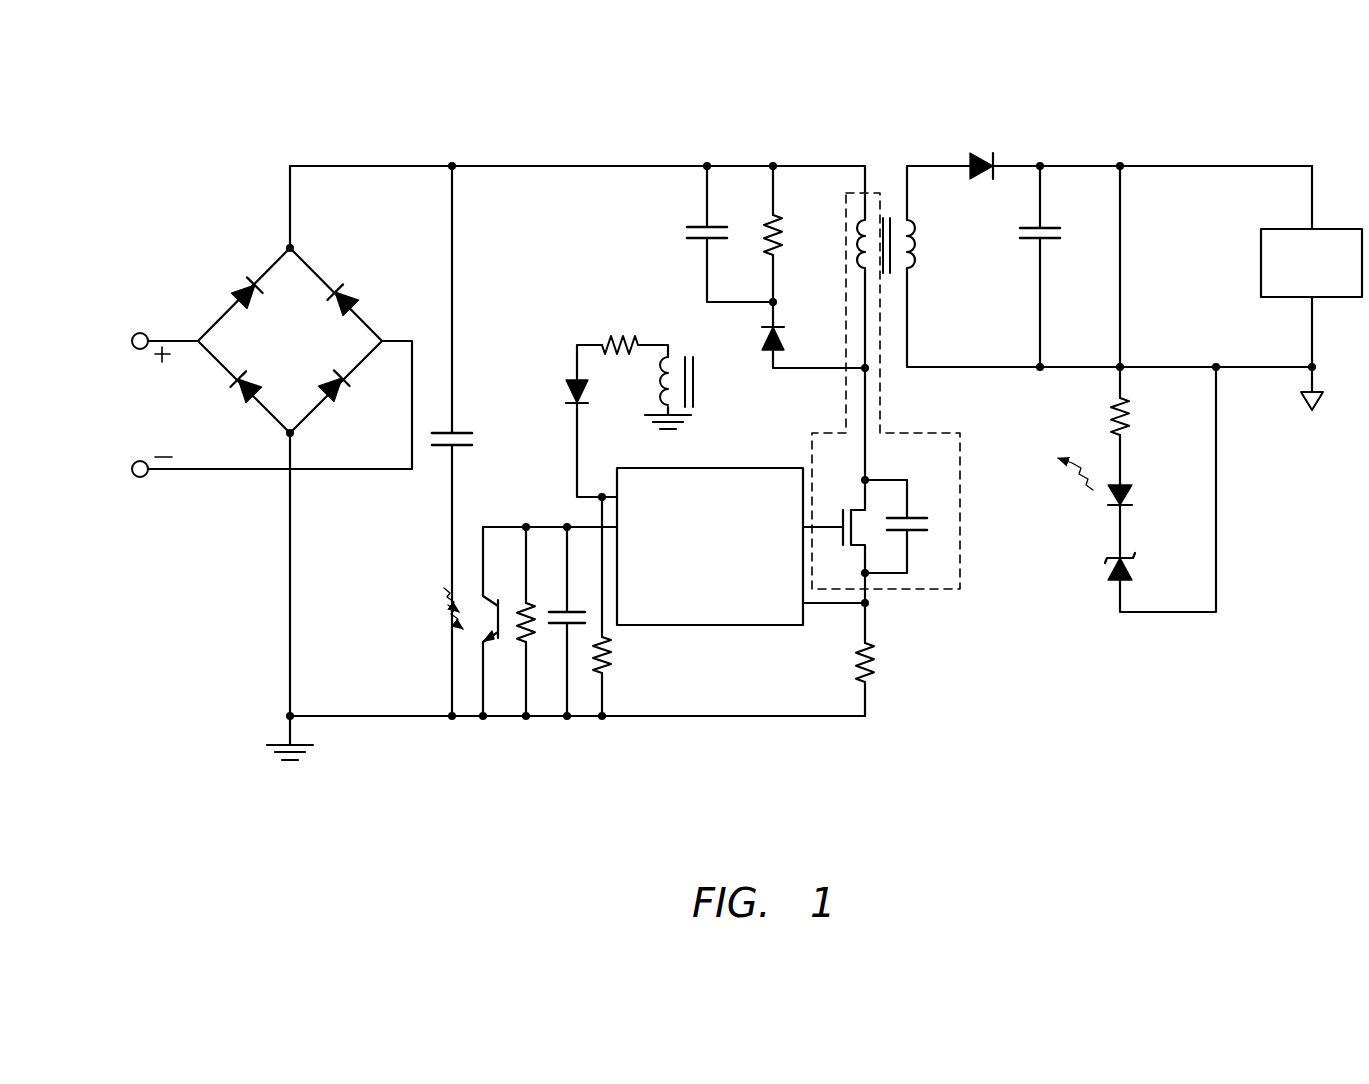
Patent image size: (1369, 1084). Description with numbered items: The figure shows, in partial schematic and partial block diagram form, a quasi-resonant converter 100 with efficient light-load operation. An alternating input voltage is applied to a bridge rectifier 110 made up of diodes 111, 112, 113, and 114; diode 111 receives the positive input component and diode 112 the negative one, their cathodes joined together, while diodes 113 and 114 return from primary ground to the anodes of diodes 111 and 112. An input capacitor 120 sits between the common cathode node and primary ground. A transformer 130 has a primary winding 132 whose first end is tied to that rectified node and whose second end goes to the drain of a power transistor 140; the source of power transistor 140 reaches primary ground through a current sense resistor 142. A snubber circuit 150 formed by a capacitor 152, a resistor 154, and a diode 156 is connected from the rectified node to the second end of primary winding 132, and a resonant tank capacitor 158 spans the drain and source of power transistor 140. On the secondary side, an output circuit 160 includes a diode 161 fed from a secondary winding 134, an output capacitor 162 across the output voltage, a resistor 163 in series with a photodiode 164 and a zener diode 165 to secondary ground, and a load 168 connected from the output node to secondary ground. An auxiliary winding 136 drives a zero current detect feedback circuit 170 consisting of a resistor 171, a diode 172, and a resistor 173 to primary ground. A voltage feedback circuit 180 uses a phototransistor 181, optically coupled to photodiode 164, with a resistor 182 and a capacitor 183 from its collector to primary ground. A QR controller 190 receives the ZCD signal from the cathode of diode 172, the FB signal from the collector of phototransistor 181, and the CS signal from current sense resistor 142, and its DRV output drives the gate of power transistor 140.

The quasi-resonant (QR) converter 100 is at (128, 146).
The bridge rectifier 110 is at (232, 236).
The diode 111 is at (238, 290).
The diode 112 is at (352, 288).
The diode 113 is at (270, 373).
The diode 114 is at (343, 400).
The input capacitor 120 is at (466, 430).
The transformer 130 is at (887, 176).
The primary winding 132 is at (862, 228).
The secondary winding 134 is at (912, 250).
The auxiliary winding 136 is at (670, 358).
The power transistor 140 is at (852, 508).
The current sense resistor 142 is at (856, 652).
The snubber circuit 150 is at (668, 250).
The capacitor 152 is at (690, 224).
The resistor 154 is at (765, 222).
The diode 156 is at (763, 347).
The resonant tank capacitor 158 is at (907, 516).
The output circuit 160 is at (980, 148).
The diode 161 is at (987, 156).
The output capacitor 162 is at (1032, 226).
The resistor 163 is at (1112, 408).
The photodiode 164 is at (1110, 495).
The zener diode 165 is at (1108, 578).
The load 168 is at (1300, 228).
The zero current detect (ZCD) feedback circuit 170 is at (582, 320).
The resistor 171 is at (612, 336).
The diode 172 is at (570, 382).
The resistor 173 is at (610, 655).
The voltage feedback circuit 180 is at (520, 502).
The phototransistor 181 is at (502, 585).
The resistor 182 is at (520, 642).
The capacitor 183 is at (556, 628).
The QR controller 190 is at (783, 468).